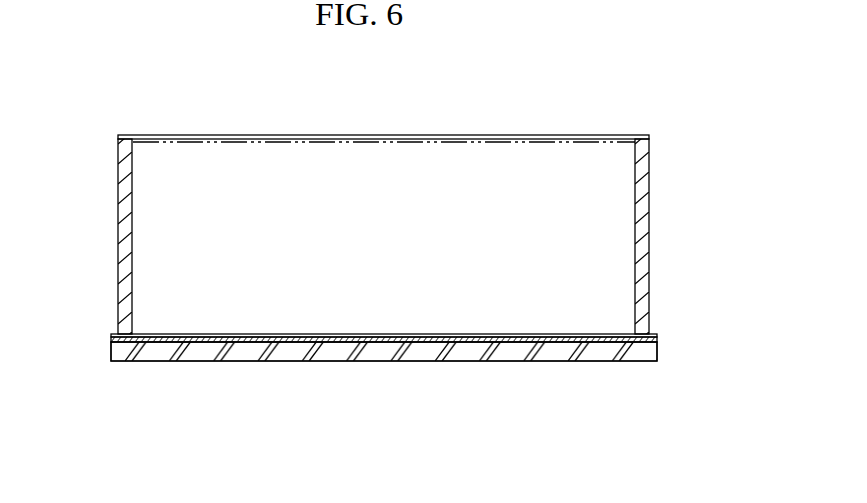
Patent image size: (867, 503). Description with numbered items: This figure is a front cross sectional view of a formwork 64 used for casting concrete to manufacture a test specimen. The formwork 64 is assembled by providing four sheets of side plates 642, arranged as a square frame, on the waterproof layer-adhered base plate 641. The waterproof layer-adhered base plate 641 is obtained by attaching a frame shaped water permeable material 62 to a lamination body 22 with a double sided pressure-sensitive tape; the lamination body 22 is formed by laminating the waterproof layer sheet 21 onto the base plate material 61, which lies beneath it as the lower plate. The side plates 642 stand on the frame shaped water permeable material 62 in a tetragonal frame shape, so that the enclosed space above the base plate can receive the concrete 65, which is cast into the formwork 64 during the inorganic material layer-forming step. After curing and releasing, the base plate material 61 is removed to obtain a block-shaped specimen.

The formwork 64 is at (383, 193).
The waterproof layer-adhered base plate 641 is at (290, 361).
The side plate 642 is at (358, 135).
The concrete 65 is at (544, 137).
The frame shaped water permeable material 62 is at (572, 333).
The lamination body 22 is at (448, 365).
The waterproof layer sheet 21 is at (598, 336).
The base plate material 61 is at (645, 350).